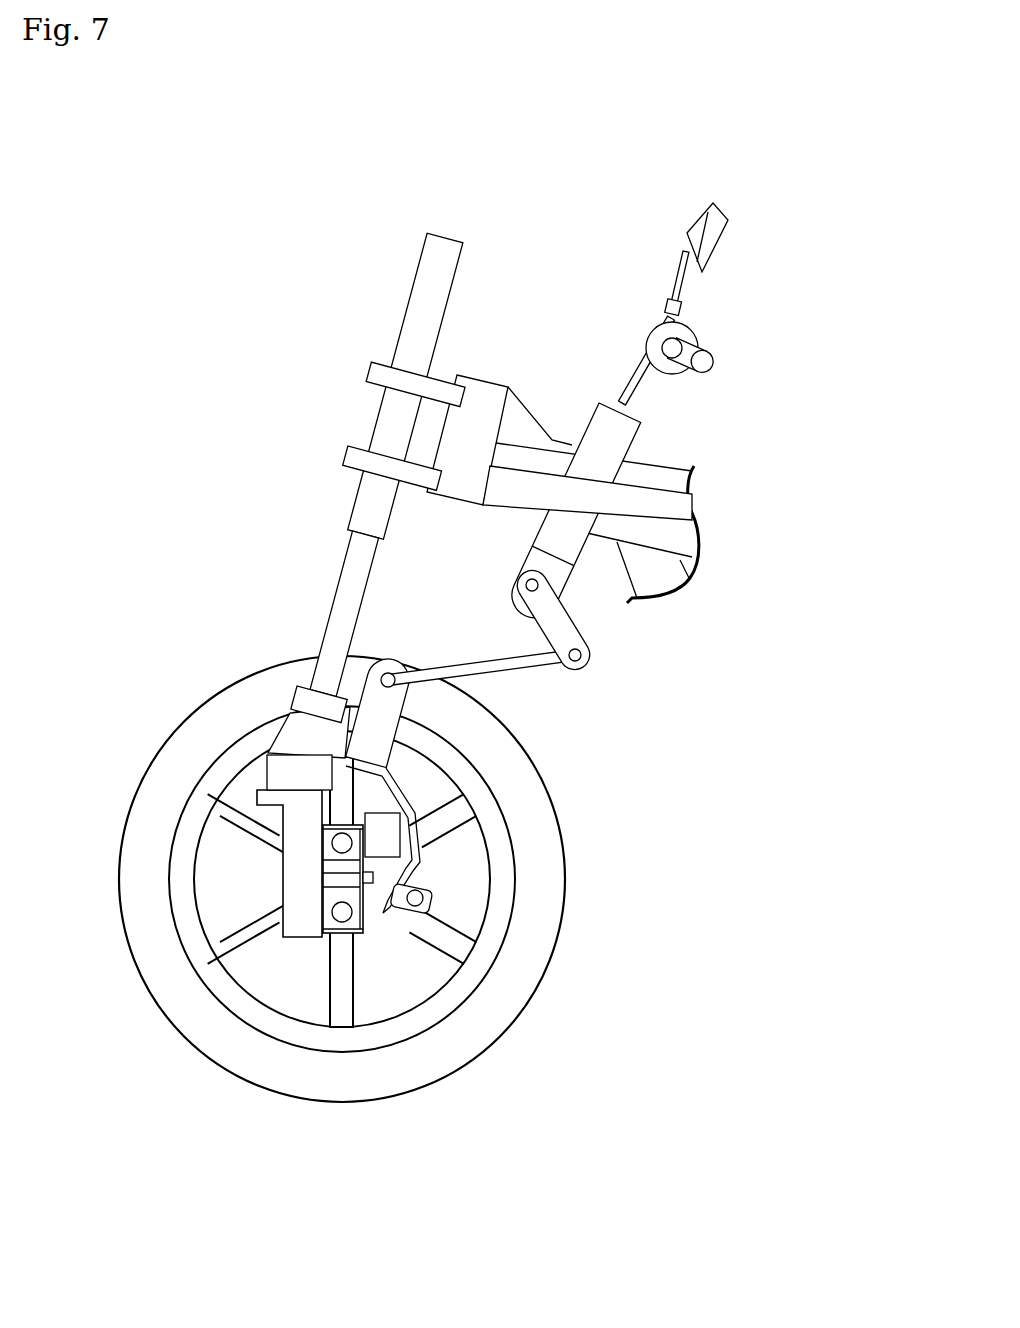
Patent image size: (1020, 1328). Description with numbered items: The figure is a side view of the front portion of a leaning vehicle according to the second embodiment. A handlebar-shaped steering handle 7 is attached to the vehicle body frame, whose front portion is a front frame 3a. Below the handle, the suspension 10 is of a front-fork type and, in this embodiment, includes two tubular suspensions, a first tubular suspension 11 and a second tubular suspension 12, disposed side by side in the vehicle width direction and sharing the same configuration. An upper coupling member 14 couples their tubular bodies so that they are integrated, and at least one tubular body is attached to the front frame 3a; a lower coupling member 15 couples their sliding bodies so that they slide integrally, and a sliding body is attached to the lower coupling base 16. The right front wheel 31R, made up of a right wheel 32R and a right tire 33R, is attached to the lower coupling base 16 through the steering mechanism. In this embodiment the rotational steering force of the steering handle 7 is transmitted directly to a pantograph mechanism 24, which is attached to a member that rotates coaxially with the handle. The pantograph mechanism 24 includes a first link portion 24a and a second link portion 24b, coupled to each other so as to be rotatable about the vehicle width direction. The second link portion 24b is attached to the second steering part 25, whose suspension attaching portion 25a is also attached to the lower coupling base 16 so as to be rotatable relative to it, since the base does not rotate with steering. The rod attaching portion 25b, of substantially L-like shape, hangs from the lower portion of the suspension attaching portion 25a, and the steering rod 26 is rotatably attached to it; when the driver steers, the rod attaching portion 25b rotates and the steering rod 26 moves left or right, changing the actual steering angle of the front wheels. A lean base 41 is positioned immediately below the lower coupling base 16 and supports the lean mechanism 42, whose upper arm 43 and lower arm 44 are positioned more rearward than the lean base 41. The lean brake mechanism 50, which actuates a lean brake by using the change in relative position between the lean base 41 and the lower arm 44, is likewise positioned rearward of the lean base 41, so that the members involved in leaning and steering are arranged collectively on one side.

The steering handle 7 is at (775, 231).
The suspension 10 is at (322, 425).
The first tubular suspension 11 is at (428, 262).
The second tubular suspension 12 is at (398, 317).
The upper coupling member 14 is at (357, 448).
The front frame 3a is at (527, 428).
The lower coupling member 15 is at (296, 690).
The lower coupling base 16 is at (283, 735).
The pantograph mechanism 24 is at (602, 643).
The first link portion 24a is at (592, 630).
The second link portion 24b is at (547, 664).
The second steering part 25 is at (552, 783).
The suspension attaching portion 25a is at (396, 700).
The rod attaching portion 25b is at (402, 787).
The steering rod 26 is at (432, 898).
The right front wheel 31R is at (342, 951).
The right wheel 32R is at (412, 1182).
The right tire 33R is at (387, 1083).
The lean base 41 is at (293, 875).
The lean mechanism 42 is at (386, 950).
The upper arm 43 is at (338, 843).
The lower arm 44 is at (340, 918).
The lean brake mechanism 50 is at (396, 838).